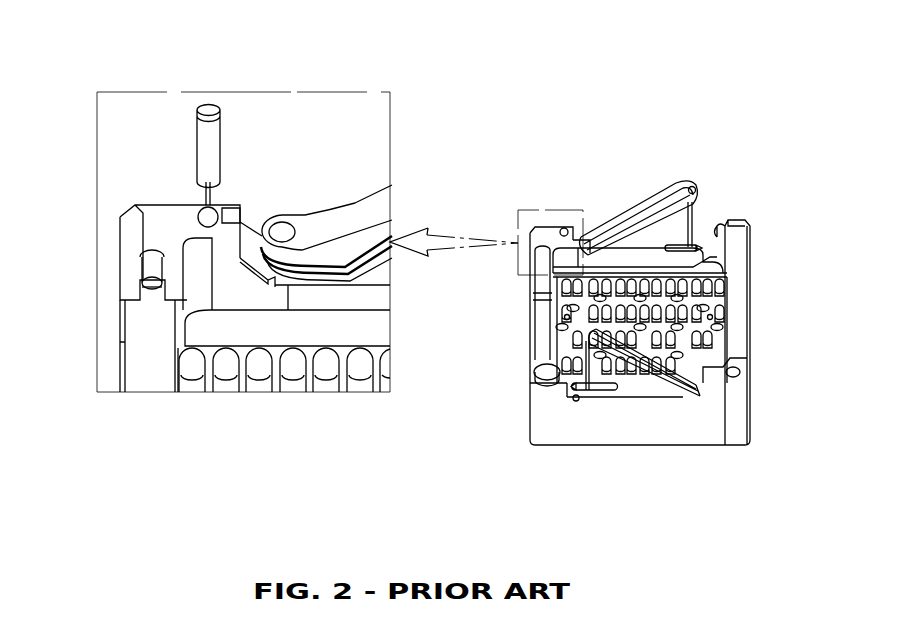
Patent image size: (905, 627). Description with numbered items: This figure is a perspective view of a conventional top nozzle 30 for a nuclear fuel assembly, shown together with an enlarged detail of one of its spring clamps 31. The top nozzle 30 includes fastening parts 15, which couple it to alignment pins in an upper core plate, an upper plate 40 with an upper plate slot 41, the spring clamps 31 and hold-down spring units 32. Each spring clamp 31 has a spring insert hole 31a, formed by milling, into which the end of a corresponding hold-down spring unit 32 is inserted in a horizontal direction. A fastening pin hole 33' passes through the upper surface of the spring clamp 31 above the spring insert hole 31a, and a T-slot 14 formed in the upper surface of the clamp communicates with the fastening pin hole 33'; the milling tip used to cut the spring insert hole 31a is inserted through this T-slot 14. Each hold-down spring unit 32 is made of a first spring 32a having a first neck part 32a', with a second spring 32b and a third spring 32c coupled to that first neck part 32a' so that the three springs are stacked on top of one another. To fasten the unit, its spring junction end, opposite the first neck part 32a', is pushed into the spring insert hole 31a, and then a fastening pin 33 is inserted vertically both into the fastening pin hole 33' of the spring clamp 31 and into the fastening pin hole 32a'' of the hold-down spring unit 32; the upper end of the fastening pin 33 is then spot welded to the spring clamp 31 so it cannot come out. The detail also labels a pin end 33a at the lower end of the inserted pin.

The top nozzle 30 is at (609, 188).
The spring clamp 31 is at (143, 213).
The spring insert hole 31a is at (245, 243).
The hold-down spring unit 32 is at (358, 196).
The first spring 32a is at (697, 168).
The first neck part 32a' is at (762, 258).
The fastening pin hole 32a'' is at (328, 148).
The second spring 32b is at (694, 225).
The third spring 32c is at (698, 195).
The fastening pin 33 is at (217, 128).
The fastening pin hole 33' is at (161, 156).
The pin end 33a is at (152, 287).
The T-slot 14 is at (232, 218).
The fastening part 15 is at (547, 390).
The upper plate 40 is at (642, 392).
The upper plate slot 41 is at (601, 391).